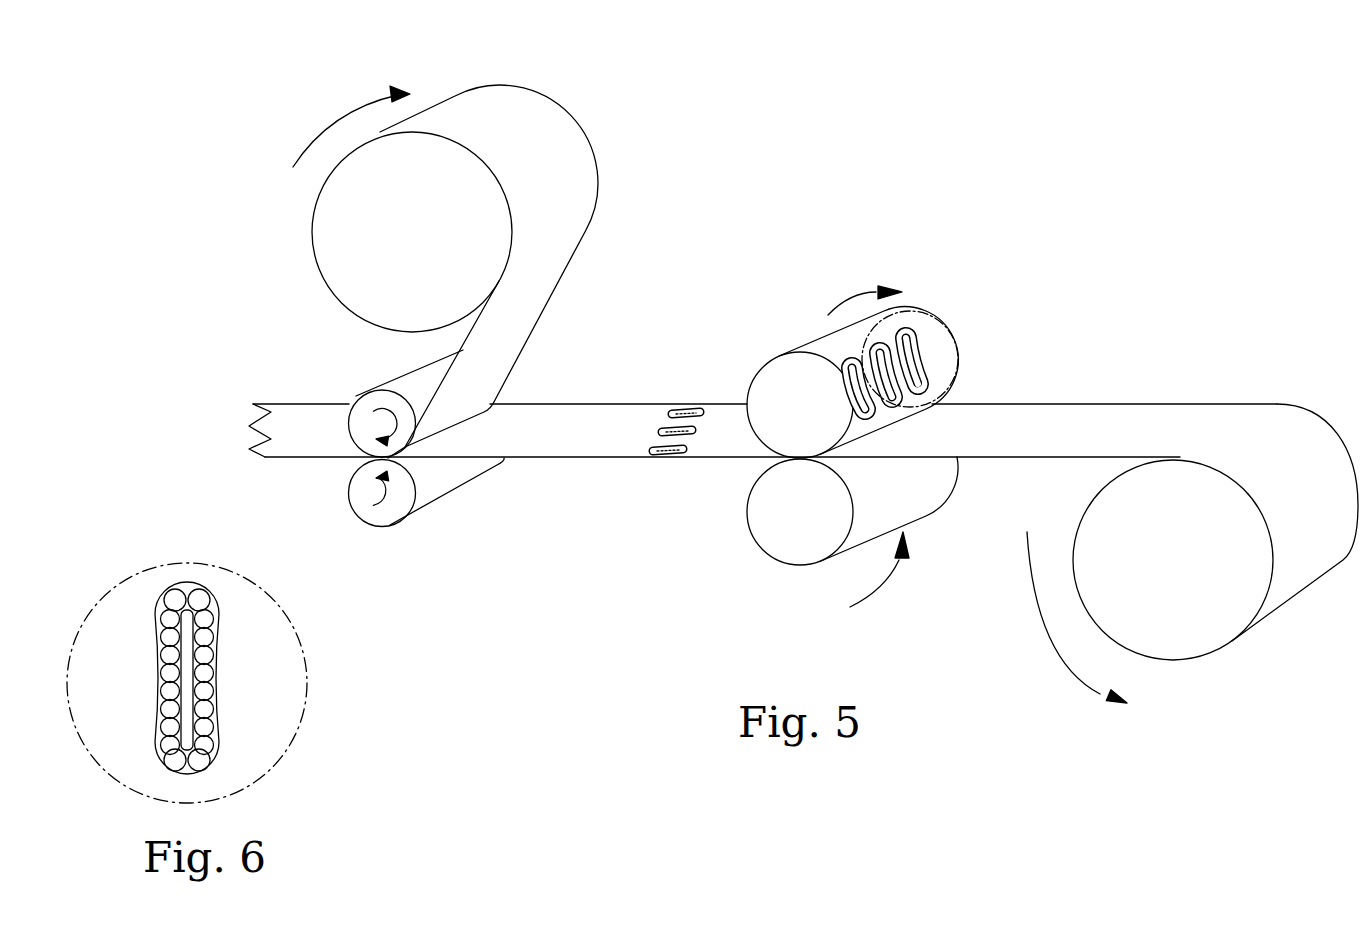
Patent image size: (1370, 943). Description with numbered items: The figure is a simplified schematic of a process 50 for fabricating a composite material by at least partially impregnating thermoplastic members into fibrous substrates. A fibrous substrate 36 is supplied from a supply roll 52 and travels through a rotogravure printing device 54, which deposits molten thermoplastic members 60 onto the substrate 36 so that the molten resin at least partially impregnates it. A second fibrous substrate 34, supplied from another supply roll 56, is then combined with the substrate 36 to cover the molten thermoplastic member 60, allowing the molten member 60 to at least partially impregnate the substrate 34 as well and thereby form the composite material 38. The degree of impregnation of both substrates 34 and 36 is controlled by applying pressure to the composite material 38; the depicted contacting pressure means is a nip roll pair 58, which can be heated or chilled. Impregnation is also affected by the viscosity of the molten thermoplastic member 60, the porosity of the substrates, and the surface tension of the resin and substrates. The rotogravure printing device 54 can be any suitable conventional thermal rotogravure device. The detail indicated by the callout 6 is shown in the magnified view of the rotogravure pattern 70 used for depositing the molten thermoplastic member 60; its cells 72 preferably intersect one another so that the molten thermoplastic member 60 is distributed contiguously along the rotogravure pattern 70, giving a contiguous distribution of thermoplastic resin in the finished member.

In FIG. 5, the fibrous substrate 34 is at (545, 263).
In FIG. 5, the fibrous substrate 36 is at (1083, 422).
In FIG. 5, the composite material 38 is at (293, 425).
In FIG. 5, the process 50 is at (998, 241).
In FIG. 5, the supply roll 52 is at (1188, 648).
In FIG. 5, the rotogravure printing device 54 is at (803, 352).
In FIG. 5, the supply roll 56 is at (337, 273).
In FIG. 5, the nip roll pair 58 is at (385, 526).
In FIG. 5, the molten thermoplastic member 60 is at (688, 400).
In FIG. 5, the rotogravure pattern 70 is at (903, 333).
In FIG. 6, the rotogravure pattern 70 is at (217, 747).
In FIG. 6, the cells 72 is at (183, 607).
In FIG. 5, the detail view circle of FIG. 6 is at (950, 330).